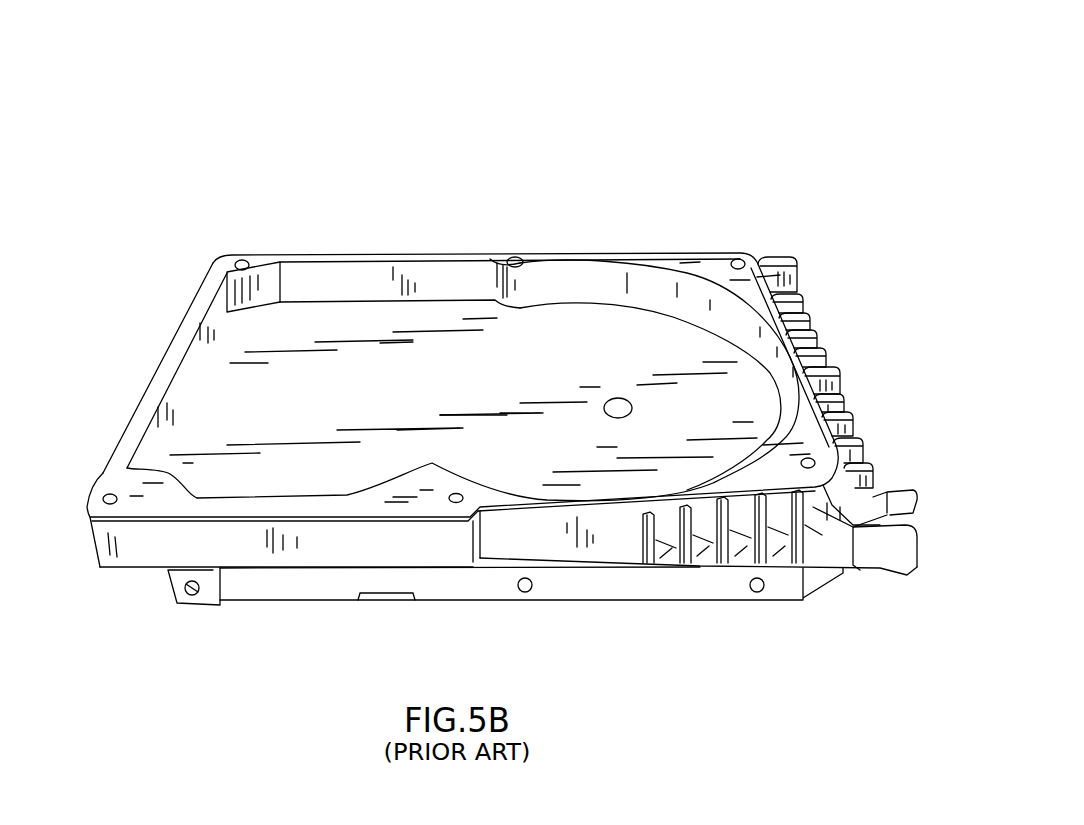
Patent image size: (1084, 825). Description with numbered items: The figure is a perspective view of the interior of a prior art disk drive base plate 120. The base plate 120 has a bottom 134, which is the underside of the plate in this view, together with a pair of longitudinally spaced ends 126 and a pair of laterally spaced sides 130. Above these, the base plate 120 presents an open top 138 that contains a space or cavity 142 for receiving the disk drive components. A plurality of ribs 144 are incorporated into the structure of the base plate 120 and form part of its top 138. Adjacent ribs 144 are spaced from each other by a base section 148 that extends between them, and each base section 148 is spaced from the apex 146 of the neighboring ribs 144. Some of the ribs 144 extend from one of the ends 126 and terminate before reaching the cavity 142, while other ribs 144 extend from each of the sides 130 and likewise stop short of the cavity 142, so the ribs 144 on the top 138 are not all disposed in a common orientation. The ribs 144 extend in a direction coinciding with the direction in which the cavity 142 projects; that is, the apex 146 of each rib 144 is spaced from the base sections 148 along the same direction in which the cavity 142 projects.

The disk drive base plate 120 is at (690, 137).
The ends 126 is at (175, 339).
The sides 130 is at (381, 248).
The bottom 134 is at (652, 600).
The open top 138 is at (124, 484).
The cavity 142 is at (531, 332).
The ribs 144 is at (812, 318).
The apex 146 is at (813, 342).
The base section 148 is at (705, 560).